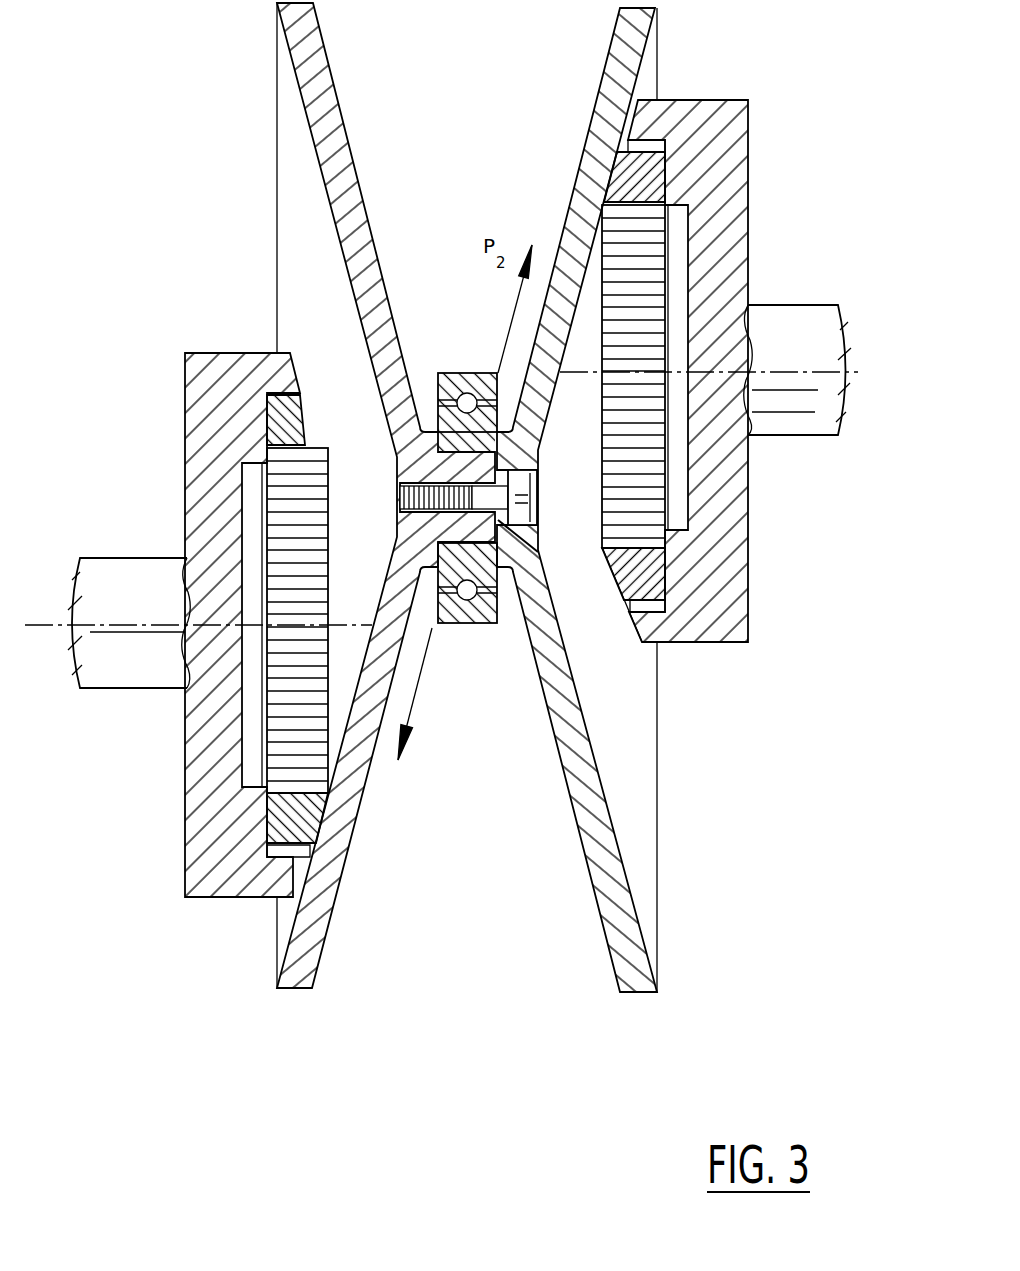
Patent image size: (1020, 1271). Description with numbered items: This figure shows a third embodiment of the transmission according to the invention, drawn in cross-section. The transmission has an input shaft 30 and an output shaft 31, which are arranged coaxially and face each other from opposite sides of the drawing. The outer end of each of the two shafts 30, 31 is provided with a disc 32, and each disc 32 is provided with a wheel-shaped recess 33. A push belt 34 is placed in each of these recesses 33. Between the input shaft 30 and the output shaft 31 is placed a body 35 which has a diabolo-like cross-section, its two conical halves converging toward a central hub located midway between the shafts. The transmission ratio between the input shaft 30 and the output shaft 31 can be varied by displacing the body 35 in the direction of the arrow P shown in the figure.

The input shaft 30 is at (120, 582).
The output shaft 31 is at (812, 325).
The disc 32 is at (222, 378).
The wheel-shaped recess 33 is at (660, 130).
The push belt 34 is at (658, 600).
The body 35 is at (602, 922).